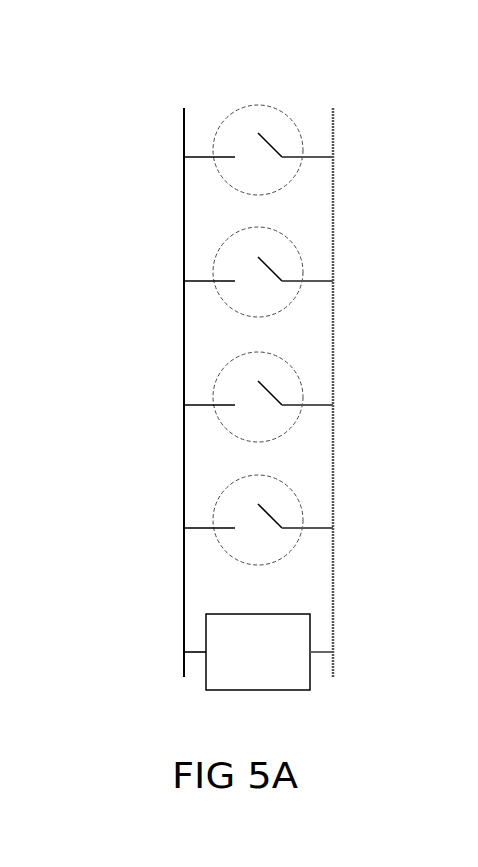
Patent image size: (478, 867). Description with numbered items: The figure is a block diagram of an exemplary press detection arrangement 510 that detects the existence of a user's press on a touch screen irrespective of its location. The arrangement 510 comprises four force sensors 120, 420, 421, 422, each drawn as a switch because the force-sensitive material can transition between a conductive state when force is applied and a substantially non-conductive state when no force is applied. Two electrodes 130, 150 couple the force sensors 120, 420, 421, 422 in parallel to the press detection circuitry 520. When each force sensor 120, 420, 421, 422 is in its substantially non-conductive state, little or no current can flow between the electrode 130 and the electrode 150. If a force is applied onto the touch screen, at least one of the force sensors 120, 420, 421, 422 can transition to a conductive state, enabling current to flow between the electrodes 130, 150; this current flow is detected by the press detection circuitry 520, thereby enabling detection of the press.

The press detection arrangement 510 is at (117, 83).
The force sensor 120 is at (292, 120).
The electrode 130 is at (184, 208).
The electrode 150 is at (334, 597).
The force sensor 420 is at (292, 245).
The force sensor 421 is at (300, 383).
The force sensor 422 is at (297, 499).
The press detection circuitry 520 is at (293, 690).